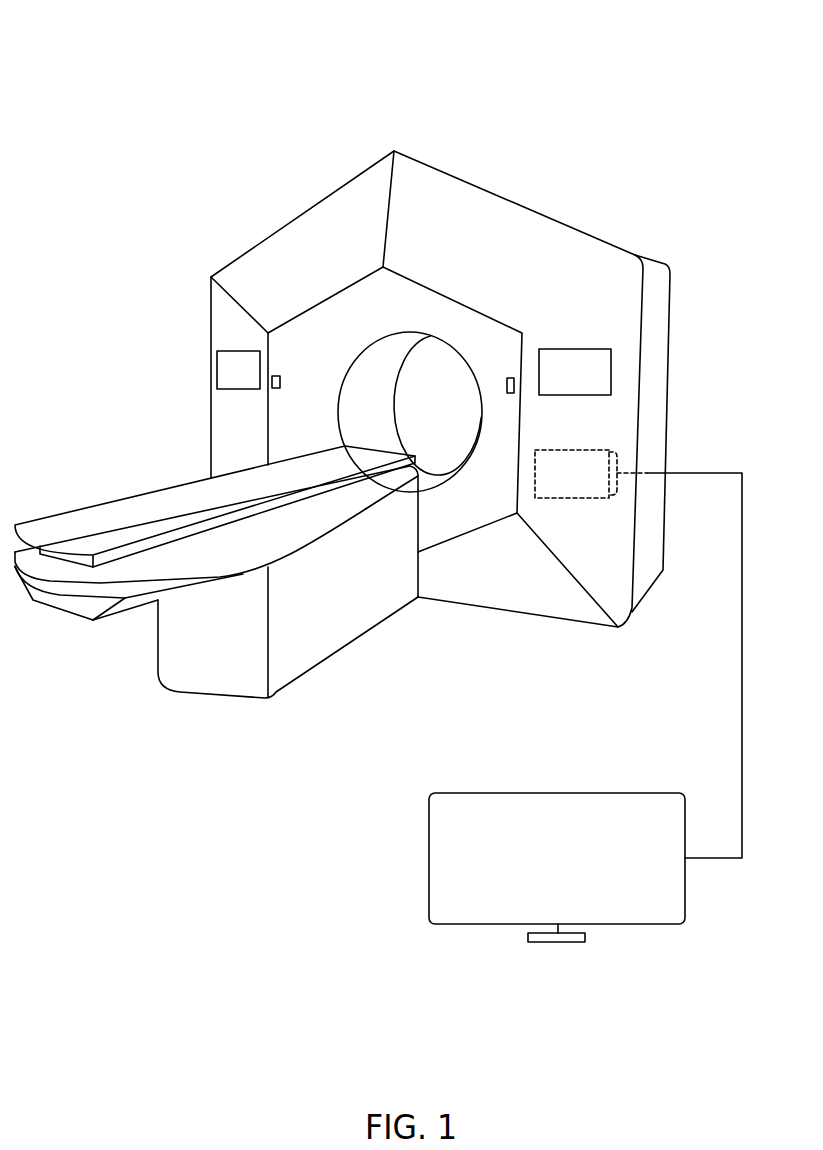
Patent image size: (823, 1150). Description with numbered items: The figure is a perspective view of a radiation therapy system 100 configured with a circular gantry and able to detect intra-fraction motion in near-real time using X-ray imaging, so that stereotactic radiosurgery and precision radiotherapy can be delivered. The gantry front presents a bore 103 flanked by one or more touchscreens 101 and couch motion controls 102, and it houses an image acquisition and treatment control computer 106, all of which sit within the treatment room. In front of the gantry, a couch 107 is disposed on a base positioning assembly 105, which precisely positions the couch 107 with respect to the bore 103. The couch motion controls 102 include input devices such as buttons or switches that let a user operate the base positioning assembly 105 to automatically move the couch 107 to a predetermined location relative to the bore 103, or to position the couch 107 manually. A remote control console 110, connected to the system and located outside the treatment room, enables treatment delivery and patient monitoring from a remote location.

The radiation therapy system 100 is at (110, 36).
The touchscreen 101 is at (237, 350).
The couch motion controls 102 is at (276, 376).
The bore 103 is at (455, 412).
The base positioning assembly 105 is at (106, 655).
The image acquisition and treatment control computer 106 is at (560, 498).
The couch 107 is at (142, 532).
The remote control console 110 is at (575, 896).